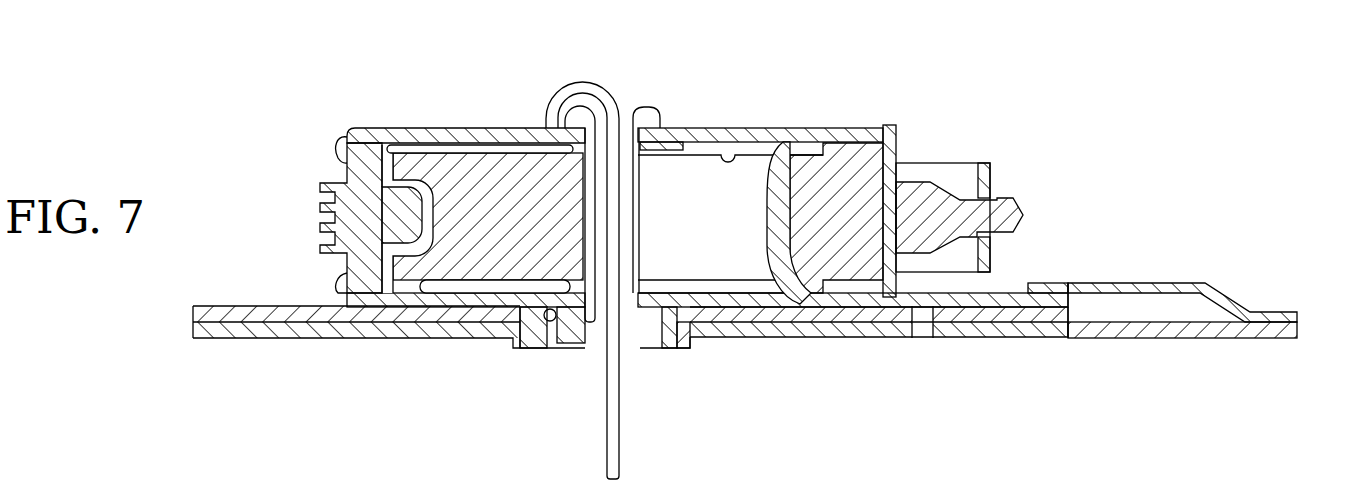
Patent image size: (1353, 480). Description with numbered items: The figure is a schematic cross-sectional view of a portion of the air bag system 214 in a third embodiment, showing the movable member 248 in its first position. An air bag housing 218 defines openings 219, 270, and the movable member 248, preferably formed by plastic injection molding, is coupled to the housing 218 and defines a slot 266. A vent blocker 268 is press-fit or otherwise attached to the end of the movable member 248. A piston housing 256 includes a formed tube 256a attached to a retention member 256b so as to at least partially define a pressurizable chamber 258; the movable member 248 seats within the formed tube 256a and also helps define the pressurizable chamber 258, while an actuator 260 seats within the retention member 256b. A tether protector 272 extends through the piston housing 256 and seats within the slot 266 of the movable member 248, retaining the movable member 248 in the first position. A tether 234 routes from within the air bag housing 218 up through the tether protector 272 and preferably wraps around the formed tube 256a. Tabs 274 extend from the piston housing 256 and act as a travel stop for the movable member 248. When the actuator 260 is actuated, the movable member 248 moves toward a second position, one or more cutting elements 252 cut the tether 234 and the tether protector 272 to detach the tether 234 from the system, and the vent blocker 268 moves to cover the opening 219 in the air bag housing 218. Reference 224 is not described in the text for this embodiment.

The air bag system 214 is at (1112, 161).
The air bag housing 218 is at (242, 340).
The opening 219 is at (1075, 325).
The housing 224 is at (498, 472).
The tether 234 is at (582, 82).
The movable member 248 is at (498, 157).
The cutting elements 252 is at (533, 350).
The piston housing 256 is at (455, 130).
The formed tube 256a is at (397, 132).
The retention member 256b is at (392, 131).
The pressurizable chamber 258 is at (390, 275).
The actuator 260 is at (320, 220).
The slot 266 is at (732, 159).
The vent blocker 268 is at (897, 147).
The opening 270 is at (684, 332).
The tether protector 272 is at (638, 107).
The tabs 274 is at (773, 267).